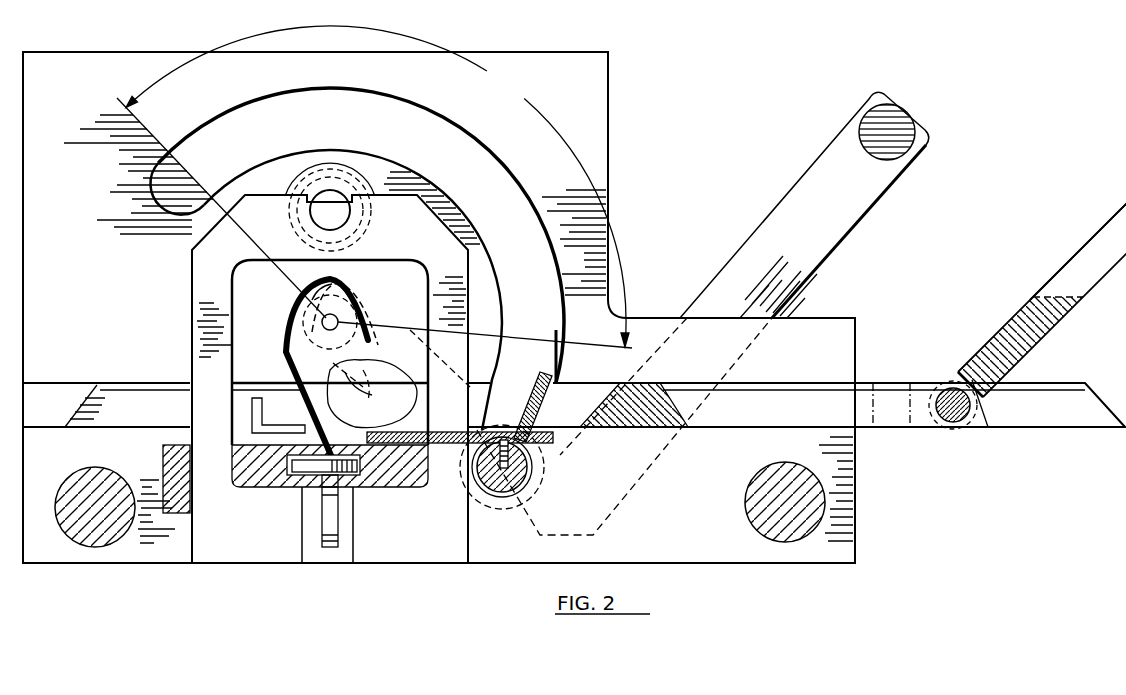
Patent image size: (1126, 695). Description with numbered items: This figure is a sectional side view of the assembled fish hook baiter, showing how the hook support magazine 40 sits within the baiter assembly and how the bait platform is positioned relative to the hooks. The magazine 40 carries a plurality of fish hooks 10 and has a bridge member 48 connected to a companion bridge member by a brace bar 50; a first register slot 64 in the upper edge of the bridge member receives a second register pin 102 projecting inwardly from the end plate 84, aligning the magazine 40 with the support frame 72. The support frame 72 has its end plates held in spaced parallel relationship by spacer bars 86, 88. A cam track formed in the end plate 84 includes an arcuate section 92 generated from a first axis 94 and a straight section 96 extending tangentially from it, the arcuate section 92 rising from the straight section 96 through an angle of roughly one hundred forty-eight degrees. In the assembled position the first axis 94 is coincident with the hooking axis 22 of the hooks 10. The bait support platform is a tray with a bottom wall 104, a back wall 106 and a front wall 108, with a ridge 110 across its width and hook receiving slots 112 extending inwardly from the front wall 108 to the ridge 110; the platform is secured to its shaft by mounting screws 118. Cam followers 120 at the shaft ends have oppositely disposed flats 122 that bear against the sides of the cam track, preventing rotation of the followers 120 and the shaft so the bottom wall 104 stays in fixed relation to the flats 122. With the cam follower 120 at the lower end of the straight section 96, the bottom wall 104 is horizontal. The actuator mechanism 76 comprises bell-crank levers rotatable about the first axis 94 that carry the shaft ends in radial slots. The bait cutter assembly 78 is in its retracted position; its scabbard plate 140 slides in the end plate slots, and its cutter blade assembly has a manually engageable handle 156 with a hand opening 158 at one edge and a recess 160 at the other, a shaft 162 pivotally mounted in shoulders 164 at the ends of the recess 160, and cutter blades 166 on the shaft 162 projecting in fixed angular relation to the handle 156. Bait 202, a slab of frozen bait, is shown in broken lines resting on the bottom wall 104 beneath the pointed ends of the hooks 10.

The fish hook 10 is at (283, 355).
The hooking axis 22 is at (328, 332).
The hook support magazine 40 is at (178, 252).
The bridge member 48 is at (200, 290).
The brace bar 50 is at (178, 487).
The first register slot 64 is at (307, 202).
The support frame 72 is at (106, 70).
The actuator mechanism 76 is at (797, 190).
The bait cutter assembly 78 is at (1024, 272).
The end plate 84 is at (572, 68).
The spacer bar 86 is at (110, 512).
The spacer bar 88 is at (782, 505).
The arcuate section 92 is at (342, 105).
The first axis 94 is at (322, 322).
The straight section 96 is at (560, 372).
The second register pin 102 is at (333, 207).
The bottom wall 104 is at (413, 470).
The back wall 106 is at (530, 400).
The front wall 108 is at (245, 420).
The ridge 110 is at (330, 432).
The hook receiving slot 112 is at (358, 428).
The mounting screw 118 is at (510, 452).
The cam follower 120 is at (518, 482).
The flat 122 is at (480, 442).
The scabbard plate 140 is at (1038, 410).
The manually engageable handle 156 is at (1018, 340).
The hand opening 158 is at (1078, 252).
The recess 160 is at (957, 375).
The shaft 162 is at (948, 415).
The shoulder 164 is at (975, 410).
The cutter blade 166 is at (858, 405).
The bait 202 is at (356, 322).